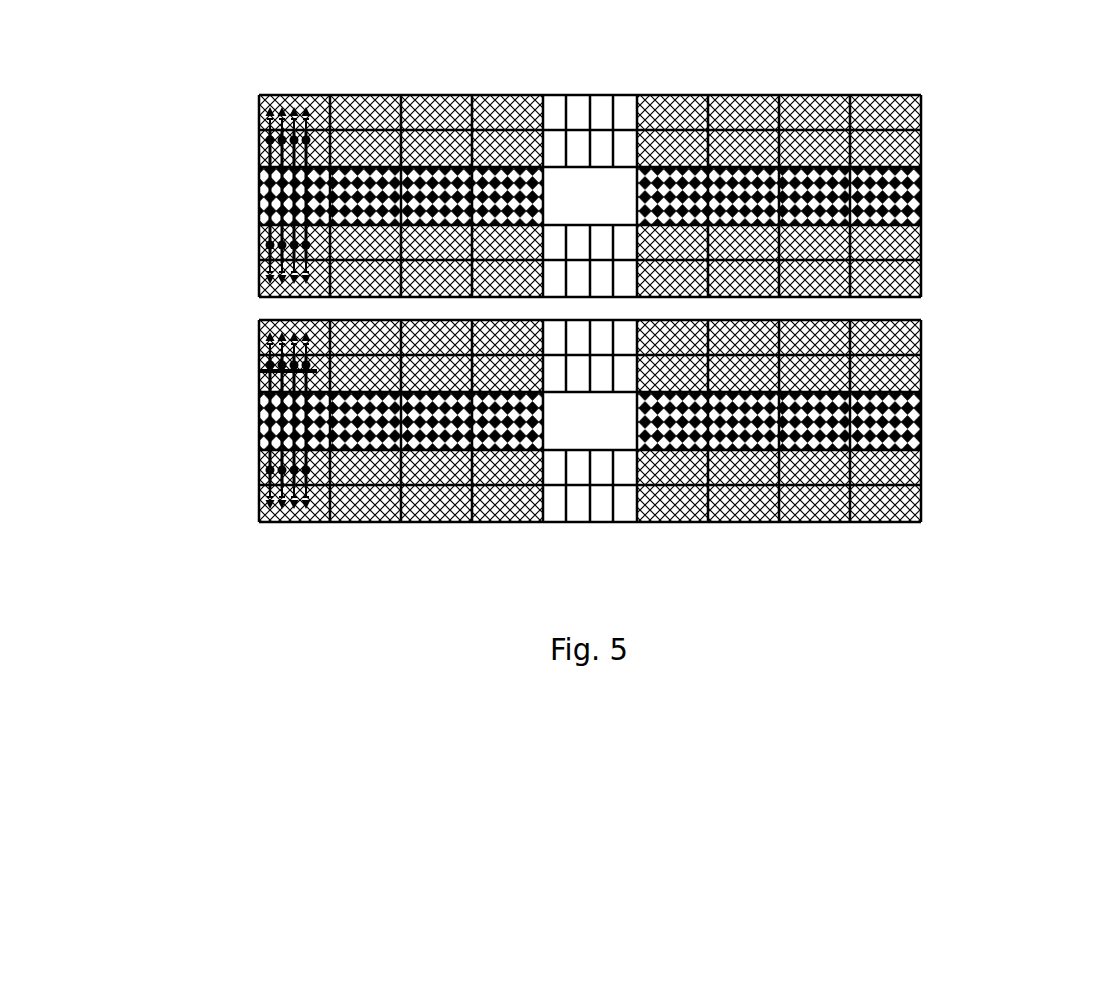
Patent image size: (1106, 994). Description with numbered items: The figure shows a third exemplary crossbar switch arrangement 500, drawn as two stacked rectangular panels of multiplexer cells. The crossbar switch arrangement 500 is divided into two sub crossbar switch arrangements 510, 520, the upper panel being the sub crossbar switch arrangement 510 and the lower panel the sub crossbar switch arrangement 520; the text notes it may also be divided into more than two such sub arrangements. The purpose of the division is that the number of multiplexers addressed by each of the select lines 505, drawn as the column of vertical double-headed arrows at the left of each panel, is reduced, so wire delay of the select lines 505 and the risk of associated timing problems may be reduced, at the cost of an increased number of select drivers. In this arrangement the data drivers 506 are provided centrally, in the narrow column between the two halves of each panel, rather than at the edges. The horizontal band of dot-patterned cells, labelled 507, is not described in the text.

The crossbar switch arrangement 500 is at (601, 356).
The select lines 505 is at (292, 370).
The data drivers 506 is at (558, 107).
The pixel row 507 is at (903, 425).
The sub crossbar switch arrangement 510 is at (669, 203).
The sub crossbar switch arrangement 520 is at (601, 446).